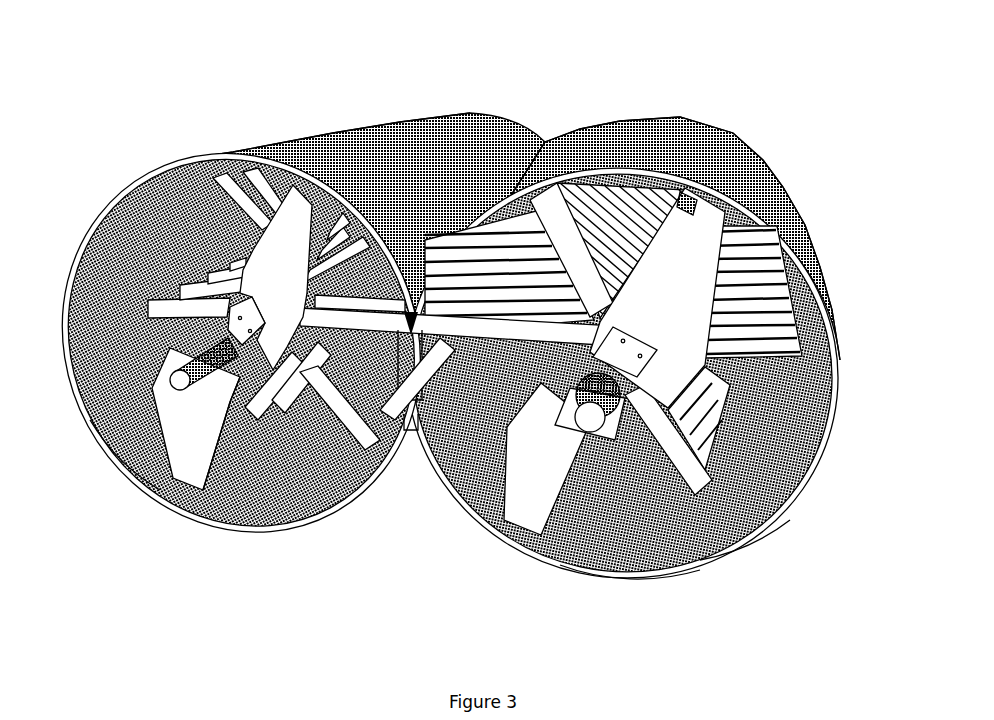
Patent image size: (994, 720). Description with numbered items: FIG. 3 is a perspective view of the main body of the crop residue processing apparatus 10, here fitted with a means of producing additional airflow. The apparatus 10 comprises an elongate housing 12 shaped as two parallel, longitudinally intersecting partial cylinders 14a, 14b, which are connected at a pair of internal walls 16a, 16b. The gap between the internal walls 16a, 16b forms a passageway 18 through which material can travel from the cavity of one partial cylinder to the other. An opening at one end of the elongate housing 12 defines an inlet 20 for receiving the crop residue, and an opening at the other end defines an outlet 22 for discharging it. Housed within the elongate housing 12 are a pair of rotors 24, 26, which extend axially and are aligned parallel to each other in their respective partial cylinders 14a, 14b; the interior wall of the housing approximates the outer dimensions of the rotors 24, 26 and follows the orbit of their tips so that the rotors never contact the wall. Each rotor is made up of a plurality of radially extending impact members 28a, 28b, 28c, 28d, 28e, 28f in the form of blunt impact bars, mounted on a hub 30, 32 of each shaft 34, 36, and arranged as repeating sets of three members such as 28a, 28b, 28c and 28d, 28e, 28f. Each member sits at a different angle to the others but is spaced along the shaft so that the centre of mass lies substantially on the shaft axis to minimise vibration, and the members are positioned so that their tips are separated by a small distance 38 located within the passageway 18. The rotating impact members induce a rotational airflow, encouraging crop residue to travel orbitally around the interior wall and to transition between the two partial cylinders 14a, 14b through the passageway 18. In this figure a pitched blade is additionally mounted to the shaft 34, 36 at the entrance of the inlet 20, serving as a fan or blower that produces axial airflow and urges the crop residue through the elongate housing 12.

The apparatus 10 is at (381, 108).
The elongate housing 12 is at (653, 100).
The partial cylinder 14a is at (740, 157).
The partial cylinder 14b is at (330, 150).
The internal wall 16a is at (412, 316).
The internal wall 16b is at (403, 412).
The passageway 18 is at (411, 393).
The inlet 20 is at (652, 600).
The outlet 22 is at (727, 98).
The rotor 24 is at (647, 457).
The rotor 26 is at (130, 455).
The impact member 28a is at (681, 452).
The impact member 28b is at (718, 208).
The impact member 28c is at (790, 355).
The impact member 28d is at (363, 433).
The impact member 28e is at (247, 412).
The impact member 28f is at (100, 215).
The hub 30 is at (744, 537).
The hub 32 is at (240, 367).
The shaft 34 is at (591, 428).
The shaft 36 is at (167, 388).
The small distance 38 is at (440, 292).